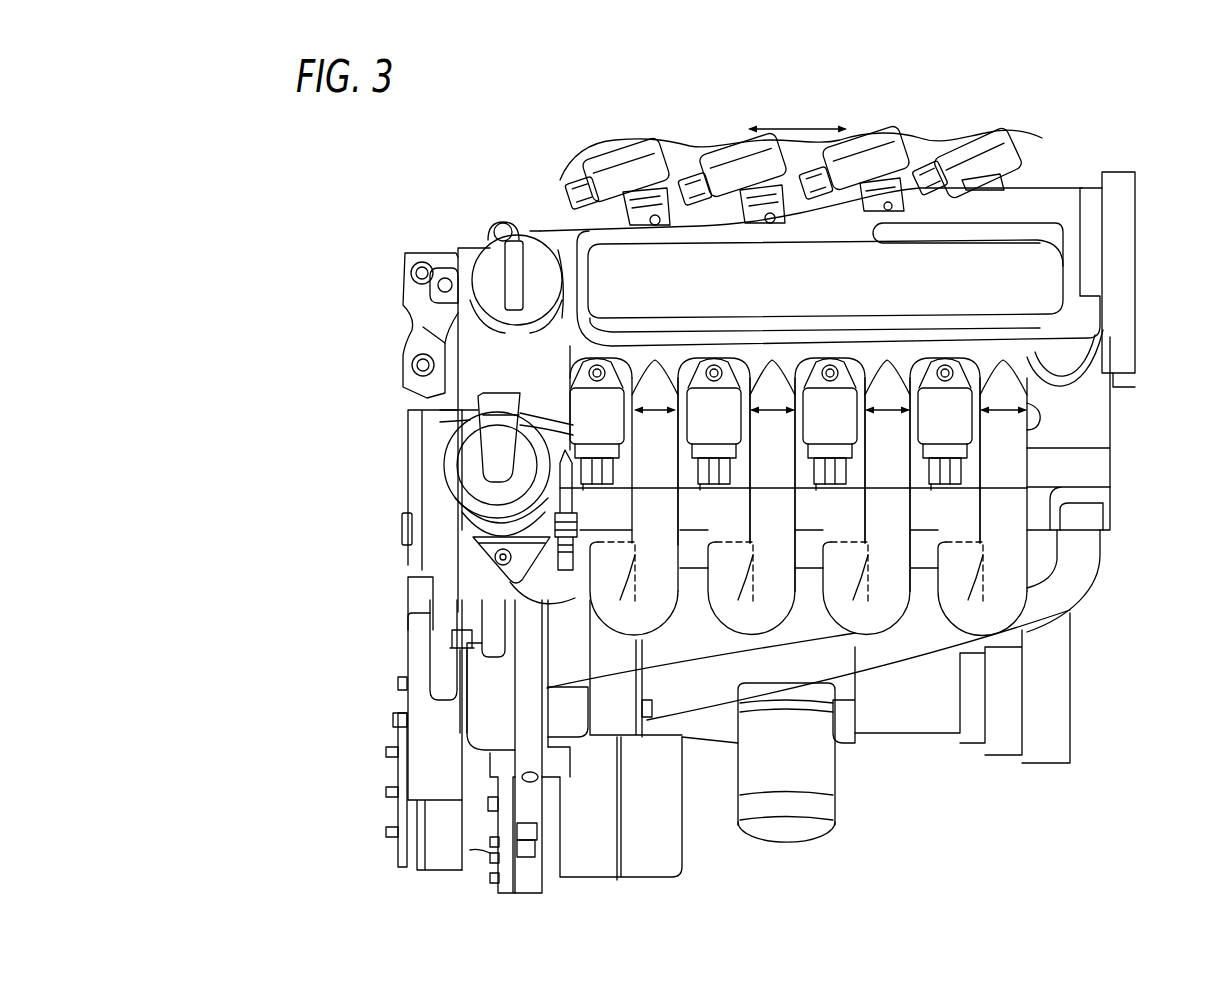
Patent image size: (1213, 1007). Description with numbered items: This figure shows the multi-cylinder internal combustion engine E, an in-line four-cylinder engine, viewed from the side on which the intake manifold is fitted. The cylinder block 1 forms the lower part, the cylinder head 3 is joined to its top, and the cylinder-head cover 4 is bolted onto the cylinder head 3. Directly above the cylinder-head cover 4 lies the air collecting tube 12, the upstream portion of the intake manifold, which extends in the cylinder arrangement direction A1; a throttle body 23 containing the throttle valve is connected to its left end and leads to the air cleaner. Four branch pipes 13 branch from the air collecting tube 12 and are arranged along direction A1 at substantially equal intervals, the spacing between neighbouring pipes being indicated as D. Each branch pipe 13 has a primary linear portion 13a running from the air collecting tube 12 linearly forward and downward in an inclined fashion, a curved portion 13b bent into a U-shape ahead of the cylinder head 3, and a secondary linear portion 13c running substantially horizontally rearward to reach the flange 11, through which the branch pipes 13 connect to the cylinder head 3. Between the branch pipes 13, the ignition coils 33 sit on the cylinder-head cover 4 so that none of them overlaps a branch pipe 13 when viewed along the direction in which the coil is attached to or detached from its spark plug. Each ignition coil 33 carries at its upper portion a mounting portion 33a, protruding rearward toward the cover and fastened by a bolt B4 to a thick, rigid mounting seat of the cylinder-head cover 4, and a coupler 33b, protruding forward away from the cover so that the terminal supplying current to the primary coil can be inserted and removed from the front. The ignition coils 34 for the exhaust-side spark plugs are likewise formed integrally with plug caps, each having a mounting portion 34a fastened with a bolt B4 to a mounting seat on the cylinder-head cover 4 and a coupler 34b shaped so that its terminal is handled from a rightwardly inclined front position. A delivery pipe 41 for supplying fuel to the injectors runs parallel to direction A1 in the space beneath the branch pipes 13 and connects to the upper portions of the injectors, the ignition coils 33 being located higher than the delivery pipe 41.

The multi-cylinder internal combustion engine E is at (381, 239).
The cylinder block 1 is at (1082, 657).
The cylinder head 3 is at (1117, 431).
The cylinder-head cover 4 is at (1055, 371).
The flange 11 is at (592, 523).
The air collecting tube 12 is at (840, 275).
The branch pipe 13 is at (762, 530).
The primary linear portion 13a is at (636, 472).
The curved portion 13b is at (752, 645).
The secondary linear portion 13c is at (596, 598).
The throttle body 23 is at (1128, 218).
The ignition coil 33 is at (586, 431).
The mounting portion 33a is at (594, 360).
The coupler 33b is at (690, 488).
The ignition coil 34 is at (737, 145).
The mounting portion 34a is at (665, 230).
The coupler 34b is at (570, 182).
The delivery pipe 41 is at (1072, 478).
The cylinder arrangement direction A1 is at (790, 127).
The bolt B4 is at (652, 227).
The intake pipe spacing D is at (656, 395).